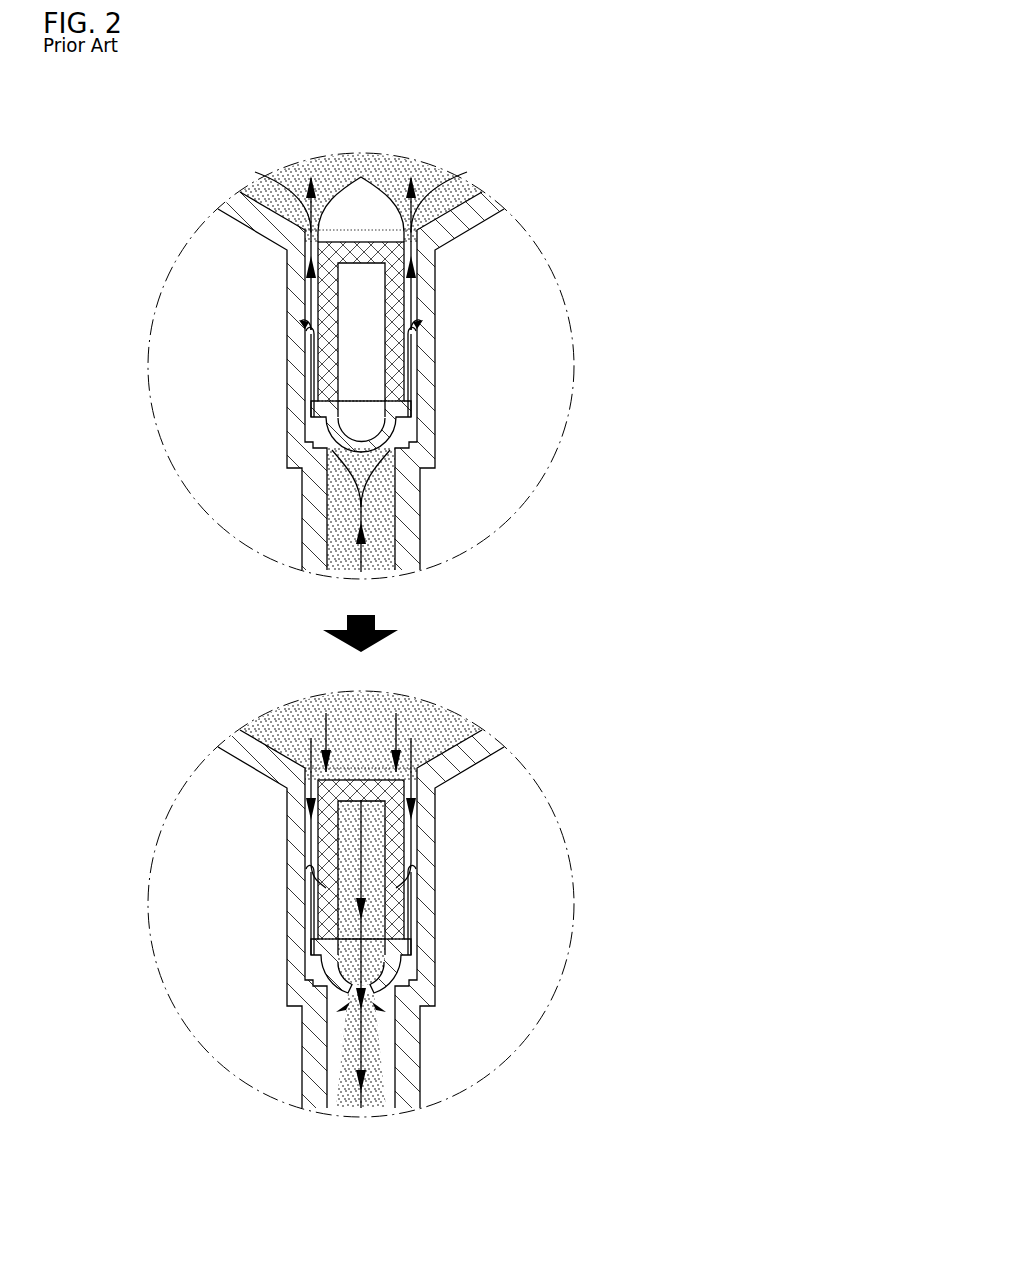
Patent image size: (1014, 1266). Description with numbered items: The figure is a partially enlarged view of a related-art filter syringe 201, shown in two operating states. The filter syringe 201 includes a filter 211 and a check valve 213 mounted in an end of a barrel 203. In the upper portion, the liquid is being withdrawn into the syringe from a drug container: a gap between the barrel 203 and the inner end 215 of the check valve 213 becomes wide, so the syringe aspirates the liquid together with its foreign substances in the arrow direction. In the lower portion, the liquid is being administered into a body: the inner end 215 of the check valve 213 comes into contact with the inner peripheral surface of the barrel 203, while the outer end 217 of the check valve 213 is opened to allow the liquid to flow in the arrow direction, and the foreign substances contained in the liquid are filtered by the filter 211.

The filter syringe 201 is at (571, 181).
The barrel 203 is at (435, 360).
The filter 211 is at (327, 297).
The check valve 213 is at (317, 408).
The inner end of the check valve 215 is at (406, 332).
The outer end of the check valve 217 is at (350, 445).